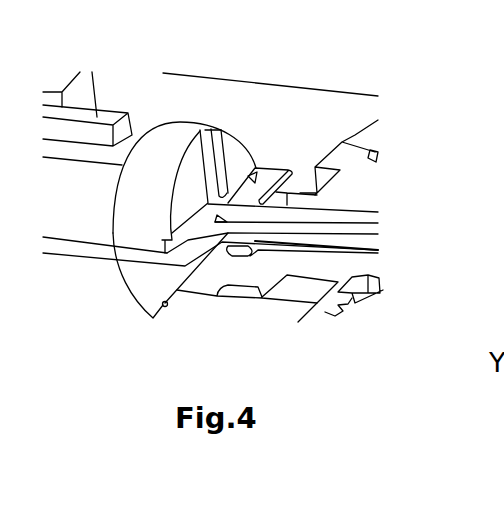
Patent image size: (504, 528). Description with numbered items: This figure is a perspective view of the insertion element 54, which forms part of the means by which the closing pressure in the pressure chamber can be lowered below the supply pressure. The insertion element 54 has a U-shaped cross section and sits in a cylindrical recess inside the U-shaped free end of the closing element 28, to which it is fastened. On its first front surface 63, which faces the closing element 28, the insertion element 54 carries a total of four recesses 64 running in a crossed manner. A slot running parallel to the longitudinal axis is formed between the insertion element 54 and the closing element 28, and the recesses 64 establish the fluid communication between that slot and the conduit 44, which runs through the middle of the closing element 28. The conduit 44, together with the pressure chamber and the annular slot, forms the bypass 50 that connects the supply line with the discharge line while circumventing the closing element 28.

The insertion element 54 is at (159, 99).
The recesses 64 is at (200, 147).
The first front surface 63 is at (224, 140).
The closing element 28 is at (272, 175).
The conduit 44 is at (362, 230).
The bypass 50 is at (503, 259).